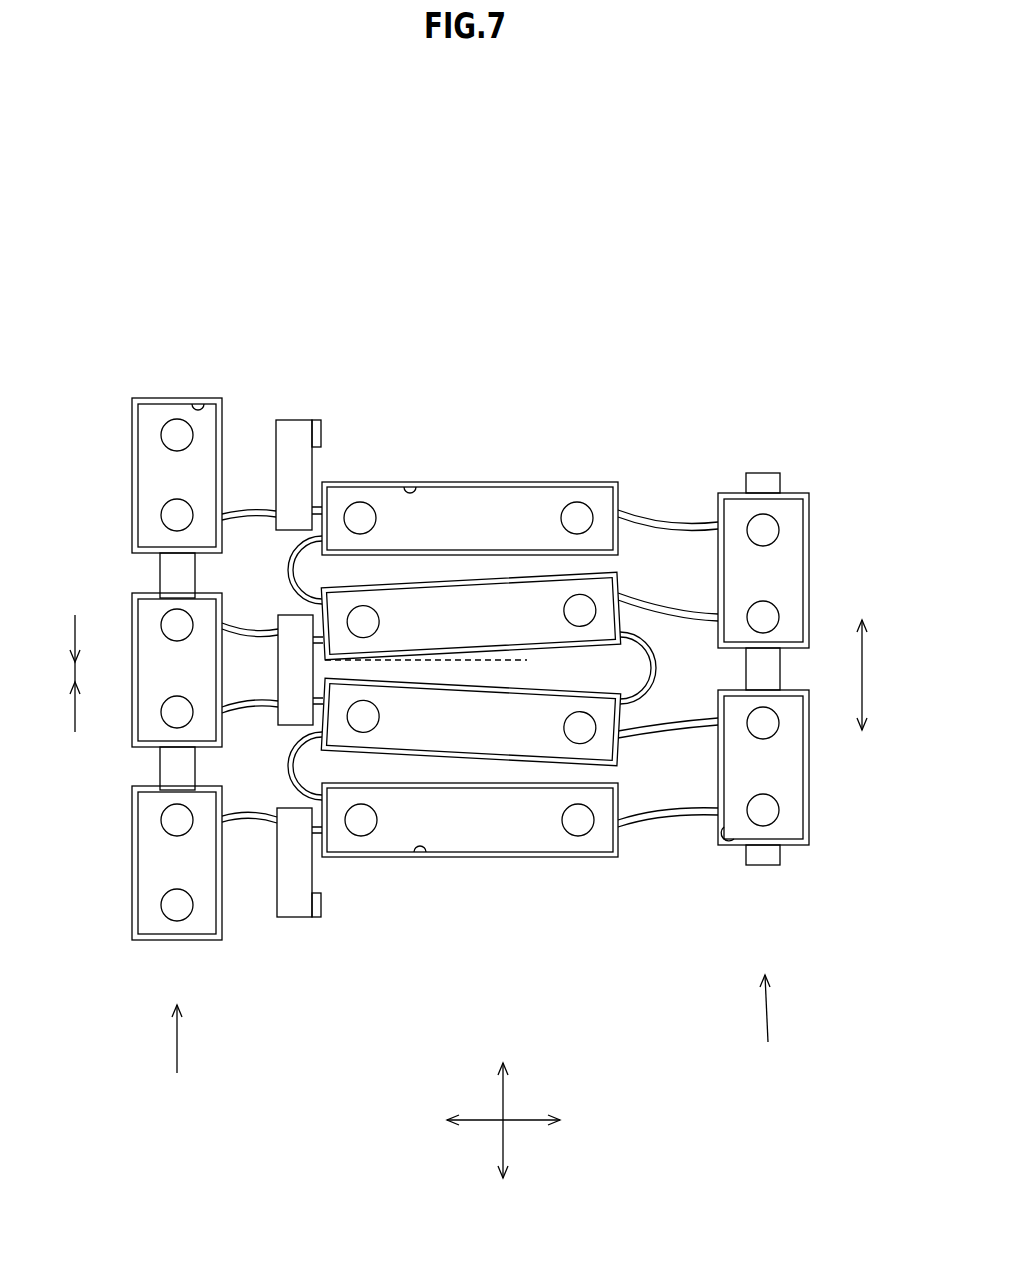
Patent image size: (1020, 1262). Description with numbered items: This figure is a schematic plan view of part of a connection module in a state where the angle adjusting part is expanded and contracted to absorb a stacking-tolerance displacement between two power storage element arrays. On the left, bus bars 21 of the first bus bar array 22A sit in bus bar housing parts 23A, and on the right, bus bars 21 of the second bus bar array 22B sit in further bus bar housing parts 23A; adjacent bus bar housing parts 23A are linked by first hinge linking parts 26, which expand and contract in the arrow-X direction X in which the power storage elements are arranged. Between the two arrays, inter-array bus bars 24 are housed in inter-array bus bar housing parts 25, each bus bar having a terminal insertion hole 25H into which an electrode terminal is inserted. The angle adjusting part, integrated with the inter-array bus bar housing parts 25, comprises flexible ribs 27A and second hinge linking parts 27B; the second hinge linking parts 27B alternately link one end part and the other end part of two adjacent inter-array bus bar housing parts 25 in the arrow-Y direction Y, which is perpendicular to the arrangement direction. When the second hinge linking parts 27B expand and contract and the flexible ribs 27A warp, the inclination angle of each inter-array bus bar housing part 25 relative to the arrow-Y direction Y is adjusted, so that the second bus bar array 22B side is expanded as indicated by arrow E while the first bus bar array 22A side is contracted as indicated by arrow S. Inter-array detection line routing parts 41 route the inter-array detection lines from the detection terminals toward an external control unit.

The bus bar 21 is at (152, 420).
The first bus bar array 22A is at (187, 1054).
The second bus bar array 22B is at (776, 1024).
The bus bar housing part 23A is at (198, 404).
The inter-array bus bar 24 is at (517, 500).
The inter-array bus bar housing part 25 is at (416, 492).
The hole 25H is at (362, 507).
The first hinge linking part 26 is at (760, 485).
The flexible rib 27A is at (249, 511).
The second hinge linking part 27B is at (287, 572).
The inter-array detection line routing part 41 is at (296, 432).
The arrow S is at (75, 672).
The arrow E is at (863, 668).
The arrow-X direction X is at (503, 1098).
The arrow-Y direction Y is at (525, 1121).